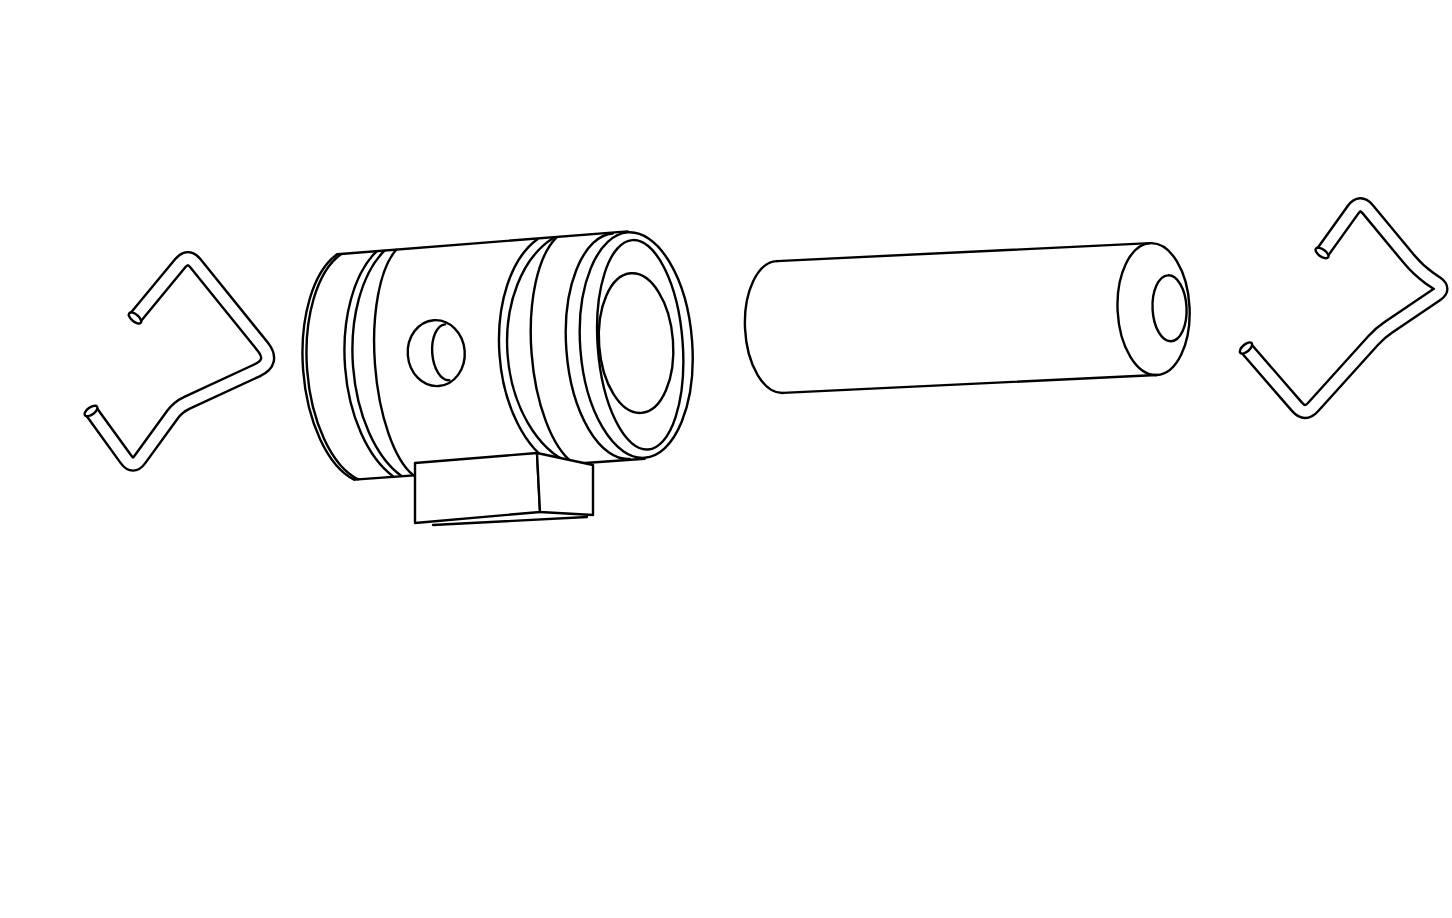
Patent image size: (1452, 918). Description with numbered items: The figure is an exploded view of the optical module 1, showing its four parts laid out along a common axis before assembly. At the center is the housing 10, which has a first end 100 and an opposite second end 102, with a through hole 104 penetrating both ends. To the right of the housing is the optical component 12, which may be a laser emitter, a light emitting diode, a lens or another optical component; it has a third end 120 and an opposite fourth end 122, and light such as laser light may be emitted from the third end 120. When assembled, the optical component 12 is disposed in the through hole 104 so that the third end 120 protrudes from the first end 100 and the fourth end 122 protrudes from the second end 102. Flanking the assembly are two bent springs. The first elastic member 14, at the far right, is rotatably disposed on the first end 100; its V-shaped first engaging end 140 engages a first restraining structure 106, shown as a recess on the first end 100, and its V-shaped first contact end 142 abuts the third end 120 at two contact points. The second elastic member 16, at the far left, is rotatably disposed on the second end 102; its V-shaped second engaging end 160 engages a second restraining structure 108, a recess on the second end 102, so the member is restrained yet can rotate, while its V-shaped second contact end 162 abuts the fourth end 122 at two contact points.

The optical module 1 is at (766, 58).
The housing 10 is at (491, 238).
The optical component 12 is at (967, 252).
The first elastic member 14 is at (1432, 265).
The second elastic member 16 is at (232, 283).
The first end 100 is at (638, 257).
The second end 102 is at (332, 262).
The through hole 104 is at (645, 403).
The first restraining structure 106 is at (560, 234).
The second restraining structure 108 is at (403, 243).
The third end 120 is at (1162, 365).
The fourth end 122 is at (757, 380).
The first engaging end 140 is at (1306, 425).
The first contact end 142 is at (1353, 190).
The second engaging end 160 is at (188, 247).
The second contact end 162 is at (128, 478).